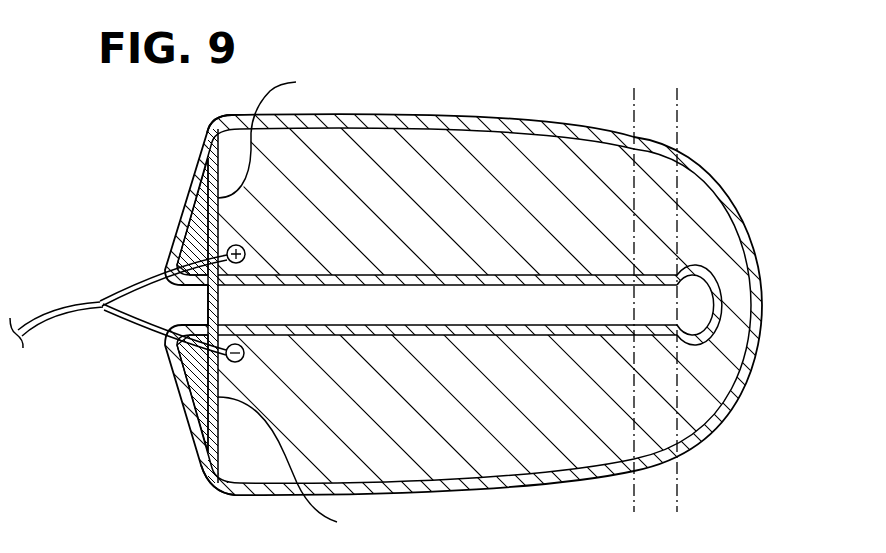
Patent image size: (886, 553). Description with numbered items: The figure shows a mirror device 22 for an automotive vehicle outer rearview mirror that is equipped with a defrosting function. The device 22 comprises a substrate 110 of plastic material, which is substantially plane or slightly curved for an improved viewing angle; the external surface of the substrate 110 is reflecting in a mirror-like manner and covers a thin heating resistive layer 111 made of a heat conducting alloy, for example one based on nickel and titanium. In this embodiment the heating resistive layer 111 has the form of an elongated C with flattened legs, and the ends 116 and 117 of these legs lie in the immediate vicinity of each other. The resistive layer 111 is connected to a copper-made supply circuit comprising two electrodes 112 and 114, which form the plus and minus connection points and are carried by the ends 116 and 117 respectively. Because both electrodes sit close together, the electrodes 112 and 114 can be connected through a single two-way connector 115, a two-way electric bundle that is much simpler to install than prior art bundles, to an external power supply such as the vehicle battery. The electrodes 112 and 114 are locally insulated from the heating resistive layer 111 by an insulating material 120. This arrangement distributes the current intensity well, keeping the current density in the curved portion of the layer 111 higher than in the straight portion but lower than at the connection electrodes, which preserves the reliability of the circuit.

The mirror device 22 is at (725, 135).
The substrate 110 is at (742, 391).
The heating resistive layer 111 is at (464, 160).
The electrode 112 is at (192, 260).
The electrode 114 is at (190, 386).
The two-way connector 115 is at (44, 306).
The end 116 is at (193, 193).
The end 117 is at (195, 448).
The insulating material 120 is at (298, 305).